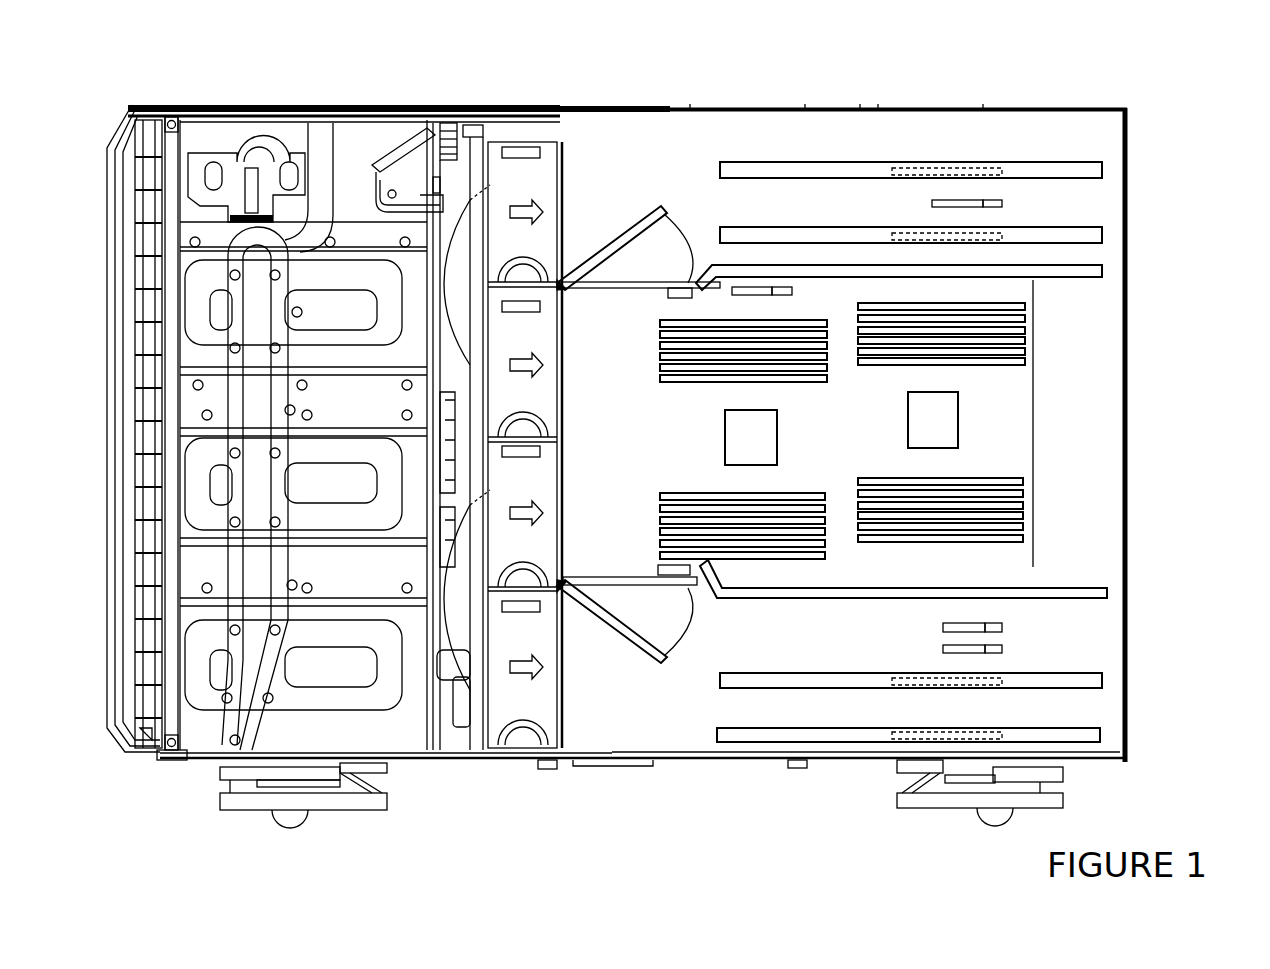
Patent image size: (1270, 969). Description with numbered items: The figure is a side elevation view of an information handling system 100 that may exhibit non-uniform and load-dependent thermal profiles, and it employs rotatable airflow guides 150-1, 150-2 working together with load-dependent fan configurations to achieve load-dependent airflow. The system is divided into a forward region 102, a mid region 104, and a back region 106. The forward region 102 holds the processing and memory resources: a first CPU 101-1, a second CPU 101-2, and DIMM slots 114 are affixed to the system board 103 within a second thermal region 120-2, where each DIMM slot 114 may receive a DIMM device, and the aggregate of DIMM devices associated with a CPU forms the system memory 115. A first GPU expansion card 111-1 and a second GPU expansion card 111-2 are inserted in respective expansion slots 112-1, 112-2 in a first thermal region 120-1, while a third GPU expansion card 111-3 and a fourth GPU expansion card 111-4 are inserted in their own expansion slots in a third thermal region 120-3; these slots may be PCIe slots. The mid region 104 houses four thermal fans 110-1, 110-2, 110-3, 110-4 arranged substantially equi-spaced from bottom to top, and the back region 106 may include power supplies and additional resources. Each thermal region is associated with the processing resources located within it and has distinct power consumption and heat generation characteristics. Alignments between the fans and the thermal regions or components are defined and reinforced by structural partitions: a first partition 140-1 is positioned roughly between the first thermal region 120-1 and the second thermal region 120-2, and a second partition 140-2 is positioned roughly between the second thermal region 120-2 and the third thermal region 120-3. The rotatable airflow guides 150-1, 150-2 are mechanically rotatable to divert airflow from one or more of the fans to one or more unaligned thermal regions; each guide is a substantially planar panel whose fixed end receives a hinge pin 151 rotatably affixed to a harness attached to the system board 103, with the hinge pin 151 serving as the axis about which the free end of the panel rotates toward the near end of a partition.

The information handling system 100 is at (1172, 74).
The forward region 102 is at (888, 398).
The mid region 104 is at (551, 397).
The back region 106 is at (448, 102).
The thermal fan 110-1 is at (578, 213).
The thermal fan 110-2 is at (578, 365).
The thermal fan 110-3 is at (578, 495).
The thermal fan 110-4 is at (580, 673).
The GPU expansion card 111-1 is at (720, 168).
The GPU expansion card 111-2 is at (738, 227).
The GPU expansion card 111-3 is at (720, 681).
The GPU expansion card 111-4 is at (717, 735).
The expansion slot 112-1 is at (900, 176).
The expansion slot 112-2 is at (898, 241).
The DIMM slot 114 is at (660, 350).
The system memory 115 is at (880, 380).
The first CPU 101-1 is at (777, 437).
The second CPU 101-2 is at (958, 430).
The system board 103 is at (866, 516).
The first thermal region 120-1 is at (1138, 120).
The second thermal region 120-2 is at (1138, 267).
The third thermal region 120-3 is at (1138, 587).
The first partition 140-1 is at (833, 279).
The second partition 140-2 is at (740, 600).
The rotatable airflow guide 150-1 is at (635, 302).
The rotatable airflow guide 150-2 is at (623, 568).
The hinge pin 151 is at (566, 290).